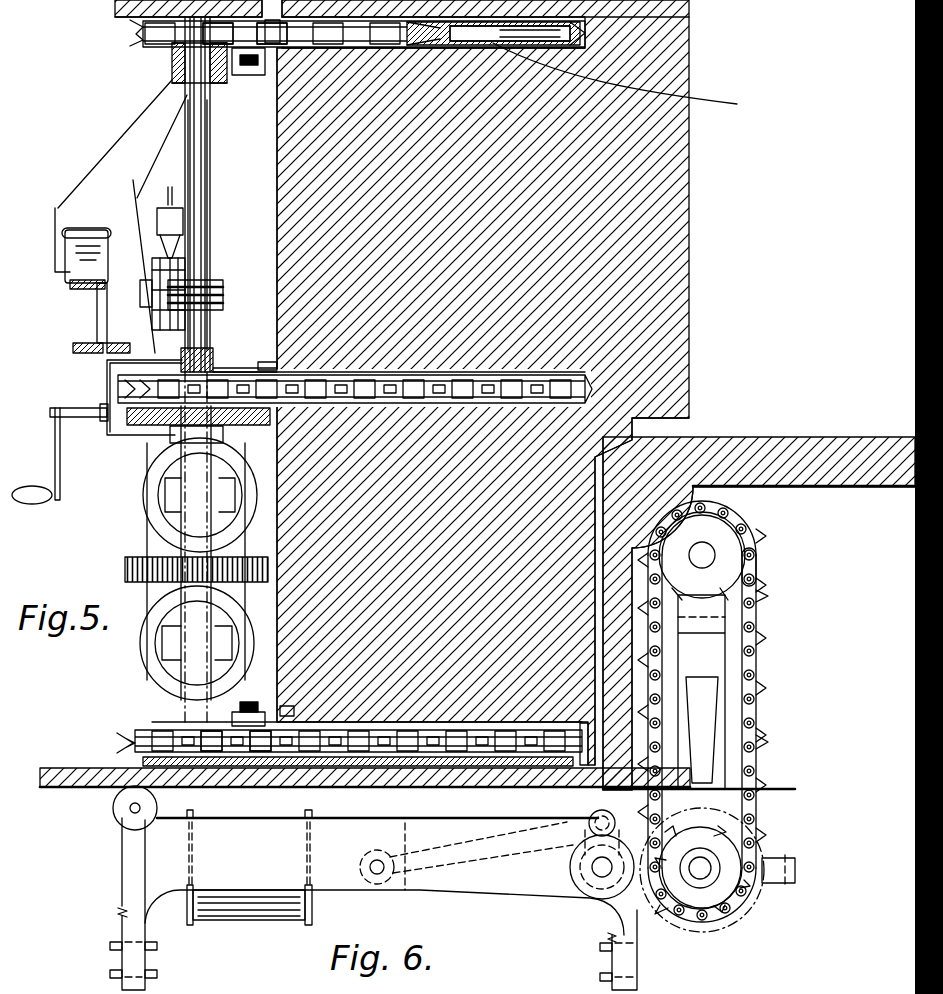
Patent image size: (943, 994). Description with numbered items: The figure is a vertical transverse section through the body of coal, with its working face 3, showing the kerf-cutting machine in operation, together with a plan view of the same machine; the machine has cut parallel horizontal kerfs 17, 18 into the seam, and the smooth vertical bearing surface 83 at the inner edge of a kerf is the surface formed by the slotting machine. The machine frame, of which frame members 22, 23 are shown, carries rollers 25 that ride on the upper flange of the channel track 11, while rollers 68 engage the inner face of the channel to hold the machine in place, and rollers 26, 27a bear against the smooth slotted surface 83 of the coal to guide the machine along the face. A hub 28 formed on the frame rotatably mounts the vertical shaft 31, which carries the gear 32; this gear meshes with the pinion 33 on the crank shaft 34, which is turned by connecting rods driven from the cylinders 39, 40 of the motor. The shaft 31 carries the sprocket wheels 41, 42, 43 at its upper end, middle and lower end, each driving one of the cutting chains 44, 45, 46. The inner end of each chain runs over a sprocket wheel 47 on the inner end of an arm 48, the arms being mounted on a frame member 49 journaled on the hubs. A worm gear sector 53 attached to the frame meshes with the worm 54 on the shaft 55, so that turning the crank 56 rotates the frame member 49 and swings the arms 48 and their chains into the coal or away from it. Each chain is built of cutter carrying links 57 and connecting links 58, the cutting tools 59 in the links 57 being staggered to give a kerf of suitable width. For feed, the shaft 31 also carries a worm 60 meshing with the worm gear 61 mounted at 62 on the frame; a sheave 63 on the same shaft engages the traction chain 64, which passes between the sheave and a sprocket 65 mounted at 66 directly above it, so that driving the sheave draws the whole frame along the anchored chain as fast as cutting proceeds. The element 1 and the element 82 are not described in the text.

In FIG. 5, the frame block 1 is at (655, 245).
In FIG. 5, the working face 3 is at (328, 208).
In FIG. 5, the track 11 is at (97, 313).
In FIG. 5, the kerf 17 is at (585, 18).
In FIG. 5, the kerf 18 is at (268, 366).
In FIG. 6, the frame member 22 is at (526, 886).
In FIG. 5, the frame member 23 is at (124, 182).
In FIG. 6, the frame member 23 is at (122, 927).
In FIG. 5, the rollers 25 is at (80, 266).
In FIG. 6, the rollers 25 is at (158, 962).
In FIG. 5, the roller 26 is at (252, 76).
In FIG. 6, the roller 26 is at (118, 811).
In FIG. 5, the roller 27a is at (245, 711).
In FIG. 5, the hub 28 is at (172, 65).
In FIG. 5, the vertical shaft 31 is at (198, 218).
In FIG. 5, the gear 32 is at (140, 570).
In FIG. 6, the pinion 33 is at (612, 918).
In FIG. 6, the crank shaft 34 is at (592, 880).
In FIG. 5, the cylinder 39 is at (145, 648).
In FIG. 5, the cylinder 40 is at (148, 490).
In FIG. 5, the sprocket wheel 41 is at (148, 38).
In FIG. 5, the sprocket wheel 42 is at (226, 362).
In FIG. 5, the sprocket wheel 43 is at (172, 723).
In FIG. 5, the cutting chain 44 is at (128, 27).
In FIG. 5, the cutting chain 45 is at (585, 382).
In FIG. 5, the cutting chain 46 is at (553, 757).
In FIG. 6, the cutting chain 46 is at (285, 910).
In FIG. 5, the sprocket wheel 47 is at (728, 540).
In FIG. 5, the arm 48 is at (278, 92).
In FIG. 5, the frame member 49 is at (197, 510).
In FIG. 5, the worm gear sector 53 is at (233, 427).
In FIG. 5, the worm 54 is at (170, 438).
In FIG. 5, the shaft 55 is at (88, 418).
In FIG. 5, the crank 56 is at (55, 445).
In FIG. 5, the cutter carrying link 57 is at (135, 752).
In FIG. 5, the connecting link 58 is at (172, 50).
In FIG. 5, the cutting tool 59 is at (135, 395).
In FIG. 5, the worm 60 is at (214, 280).
In FIG. 5, the worm gear 61 is at (212, 258).
In FIG. 5, the mounting 62 is at (148, 293).
In FIG. 5, the sheave 63 is at (143, 225).
In FIG. 5, the traction chain 64 is at (148, 281).
In FIG. 5, the sprocket 65 is at (172, 200).
In FIG. 5, the mounting 66 is at (160, 212).
In FIG. 5, the rollers 68 is at (118, 343).
In FIG. 5, the stop 82 is at (268, 712).
In FIG. 5, the bearing surface 83 is at (292, 714).